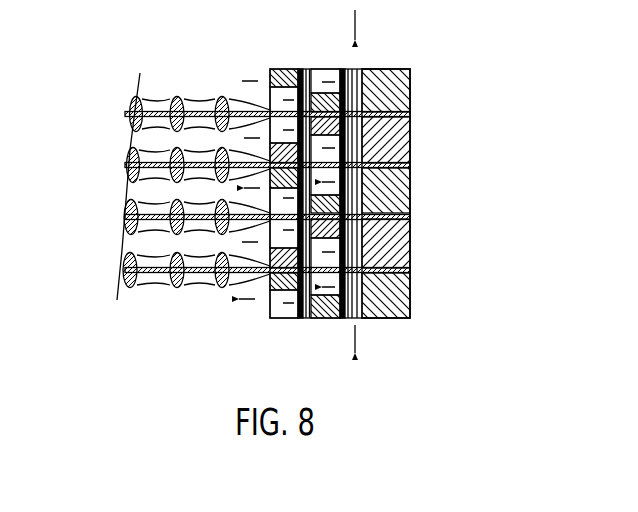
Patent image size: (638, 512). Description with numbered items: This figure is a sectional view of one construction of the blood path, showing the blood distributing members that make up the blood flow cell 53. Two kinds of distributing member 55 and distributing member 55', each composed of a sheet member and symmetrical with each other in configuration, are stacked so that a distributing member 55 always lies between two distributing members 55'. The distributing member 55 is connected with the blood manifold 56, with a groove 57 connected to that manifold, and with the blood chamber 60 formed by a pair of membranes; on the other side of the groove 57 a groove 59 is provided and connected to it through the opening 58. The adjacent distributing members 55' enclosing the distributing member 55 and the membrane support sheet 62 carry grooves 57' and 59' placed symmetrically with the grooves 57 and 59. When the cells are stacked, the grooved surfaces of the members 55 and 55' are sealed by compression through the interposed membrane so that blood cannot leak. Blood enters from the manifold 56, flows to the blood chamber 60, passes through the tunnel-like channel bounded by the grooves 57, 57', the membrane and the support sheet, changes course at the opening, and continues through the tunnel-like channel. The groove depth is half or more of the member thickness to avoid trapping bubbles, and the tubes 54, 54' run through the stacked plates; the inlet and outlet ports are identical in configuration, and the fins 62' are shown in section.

The blood flow cell 53 is at (479, 150).
The tube 54 is at (298, 176).
The tube 54' is at (297, 223).
The distributing member 55 is at (417, 192).
The distributing member 55' is at (417, 193).
The blood manifold 56 is at (357, 81).
The groove 57 is at (325, 99).
The groove 57' is at (326, 277).
The opening 58 is at (306, 73).
The groove 59 is at (265, 114).
The groove 59' is at (265, 265).
The blood chamber 60 is at (198, 137).
The membrane support sheet 62 is at (147, 181).
The fin 62' is at (176, 288).